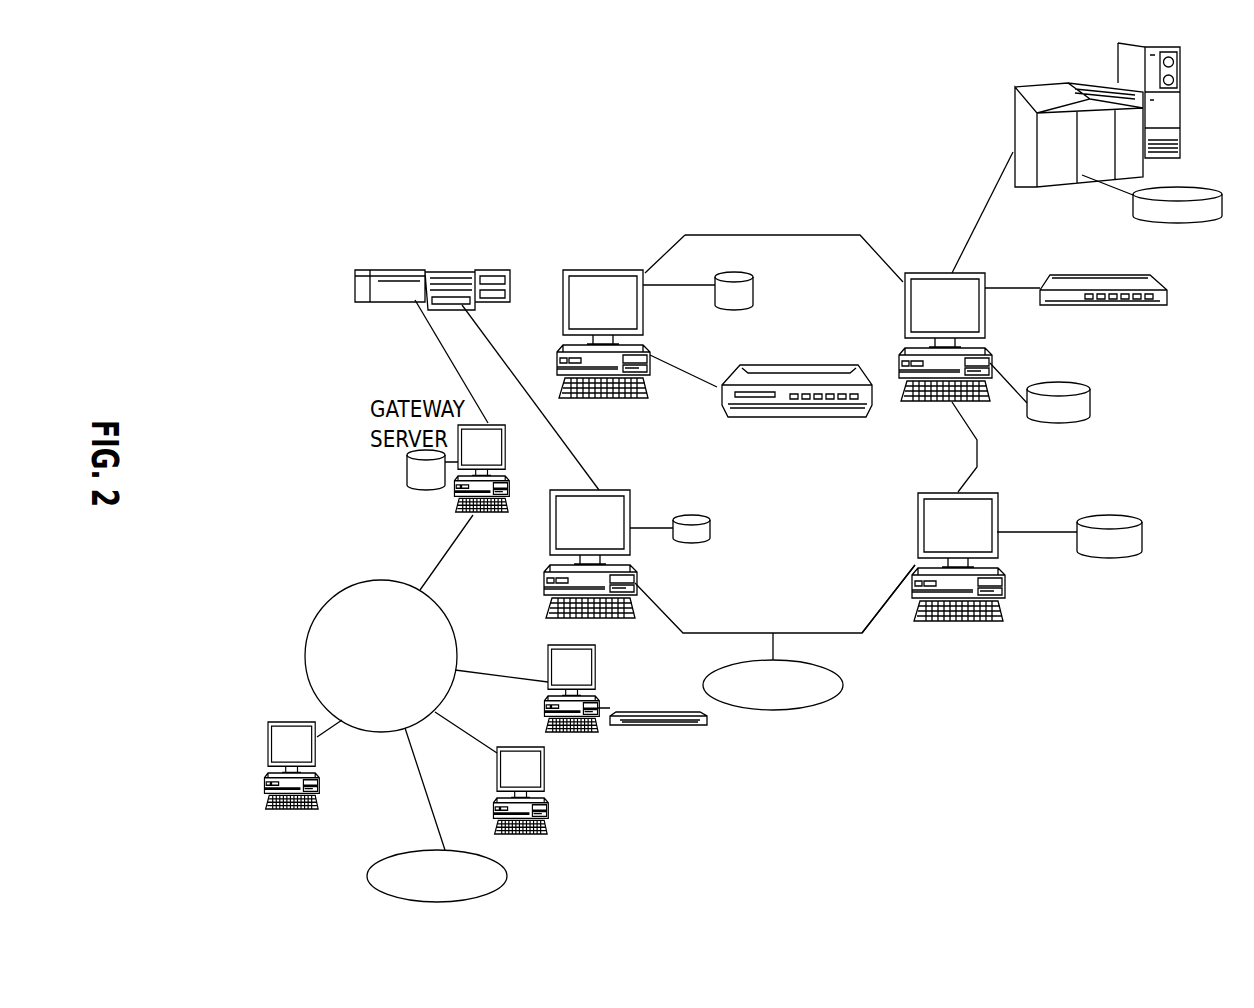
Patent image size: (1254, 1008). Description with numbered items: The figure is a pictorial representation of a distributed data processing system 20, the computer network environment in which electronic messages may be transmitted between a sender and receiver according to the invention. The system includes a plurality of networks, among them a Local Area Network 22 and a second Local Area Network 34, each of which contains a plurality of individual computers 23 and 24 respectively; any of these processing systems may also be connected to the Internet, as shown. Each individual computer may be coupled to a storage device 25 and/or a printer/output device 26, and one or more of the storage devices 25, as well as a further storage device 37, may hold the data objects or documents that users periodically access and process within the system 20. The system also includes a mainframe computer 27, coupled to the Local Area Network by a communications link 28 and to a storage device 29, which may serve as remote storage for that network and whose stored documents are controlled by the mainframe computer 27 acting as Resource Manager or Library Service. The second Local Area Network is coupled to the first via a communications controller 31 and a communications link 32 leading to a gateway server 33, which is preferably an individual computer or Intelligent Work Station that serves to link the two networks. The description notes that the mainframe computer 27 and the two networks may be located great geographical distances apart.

The distributed data processing system 20 is at (773, 235).
The local area network 22 is at (835, 697).
The individual computer 23 is at (600, 271).
The individual computer 24 is at (508, 452).
The storage device 25 is at (753, 277).
The printer/output device 26 is at (798, 362).
The mainframe computer 27 is at (1063, 92).
The communications link 28 is at (988, 195).
The storage device 29 is at (1172, 185).
The communications controller 31 is at (505, 275).
The communications link 32 is at (443, 348).
The gateway server 33 is at (862, 633).
The local area network 34 is at (380, 580).
The storage device 37 is at (752, 503).